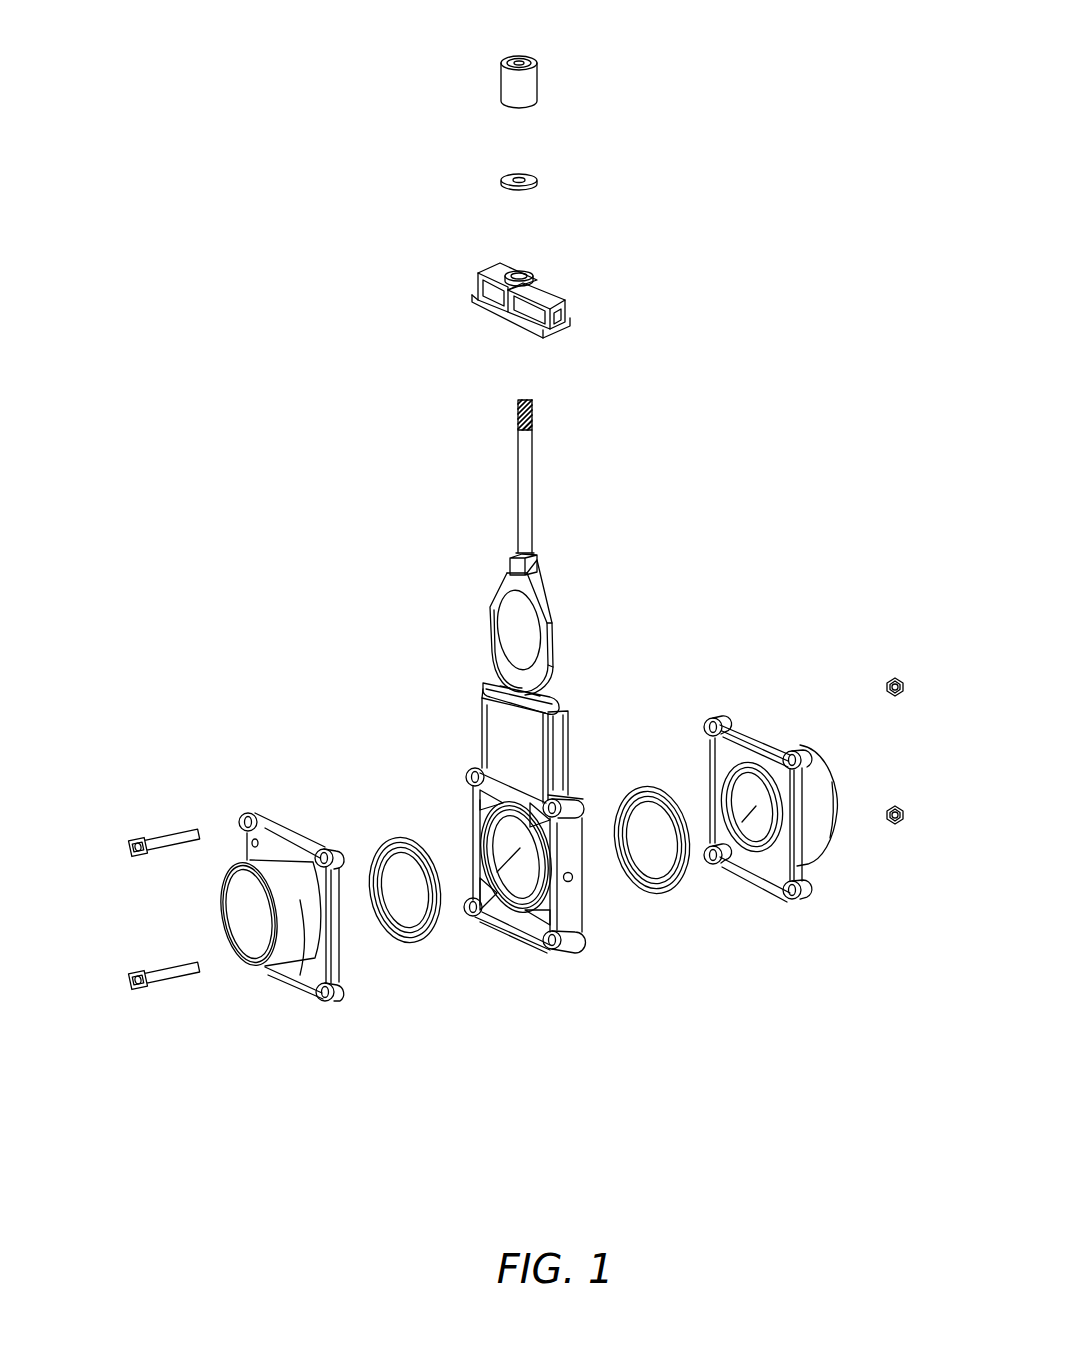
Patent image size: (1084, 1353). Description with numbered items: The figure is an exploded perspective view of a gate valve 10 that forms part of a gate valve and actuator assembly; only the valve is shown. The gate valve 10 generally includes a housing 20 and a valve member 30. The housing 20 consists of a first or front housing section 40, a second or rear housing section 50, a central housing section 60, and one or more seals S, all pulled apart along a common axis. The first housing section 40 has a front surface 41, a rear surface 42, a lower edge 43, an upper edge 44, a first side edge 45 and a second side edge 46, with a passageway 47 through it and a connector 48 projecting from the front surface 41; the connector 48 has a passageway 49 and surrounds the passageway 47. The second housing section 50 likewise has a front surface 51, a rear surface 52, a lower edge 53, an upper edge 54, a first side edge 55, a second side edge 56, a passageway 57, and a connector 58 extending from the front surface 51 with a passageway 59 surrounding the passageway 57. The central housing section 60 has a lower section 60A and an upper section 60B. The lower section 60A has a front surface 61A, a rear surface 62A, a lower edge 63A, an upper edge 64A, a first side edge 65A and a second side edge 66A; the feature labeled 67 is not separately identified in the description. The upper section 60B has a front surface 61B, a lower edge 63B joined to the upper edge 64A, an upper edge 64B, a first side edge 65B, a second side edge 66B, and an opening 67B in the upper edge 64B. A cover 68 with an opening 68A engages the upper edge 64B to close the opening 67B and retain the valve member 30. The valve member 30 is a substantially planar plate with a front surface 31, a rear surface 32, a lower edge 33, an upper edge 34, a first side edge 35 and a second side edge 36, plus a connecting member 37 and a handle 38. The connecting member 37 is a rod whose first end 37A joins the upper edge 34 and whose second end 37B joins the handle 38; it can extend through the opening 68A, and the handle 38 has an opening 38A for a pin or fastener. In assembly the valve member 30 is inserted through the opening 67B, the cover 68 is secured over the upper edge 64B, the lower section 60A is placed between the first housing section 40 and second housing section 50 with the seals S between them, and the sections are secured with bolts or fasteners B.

The gate valve 10 is at (205, 395).
The housing 20 is at (668, 1092).
The valve member 30 is at (628, 558).
The front surface 31 is at (534, 640).
The rear surface 32 is at (565, 645).
The lower edge 33 is at (485, 663).
The upper edge 34 is at (538, 560).
The first side edge 35 is at (562, 657).
The second side edge 36 is at (486, 612).
The connecting member 37 is at (532, 455).
The first end 37A is at (505, 542).
The second end 37B is at (527, 400).
The handle 38 is at (550, 67).
The opening 38A is at (490, 78).
The first housing section 40 is at (237, 1082).
The front surface 41 is at (292, 975).
The rear surface 42 is at (313, 835).
The lower edge 43 is at (262, 968).
The upper edge 44 is at (273, 840).
The first side edge 45 is at (335, 1002).
The second side edge 46 is at (236, 847).
The passageway 47 is at (345, 877).
The connector 48 is at (242, 888).
The passageway 49 is at (250, 936).
The second housing section 50 is at (878, 938).
The front surface 51 is at (818, 866).
The rear surface 52 is at (748, 742).
The lower edge 53 is at (768, 888).
The upper edge 54 is at (760, 745).
The first side edge 55 is at (705, 756).
The second side edge 56 is at (797, 805).
The passageway 57 is at (752, 828).
The connector 58 is at (828, 832).
The passageway 59 is at (840, 767).
The central housing section 60 is at (520, 1032).
The lower section 60A is at (600, 968).
The upper section 60B is at (600, 762).
The front surface 61A is at (538, 935).
The front surface 61B is at (468, 770).
The rear surface 62A is at (592, 848).
The lower edge 63A is at (481, 930).
The lower edge 63B is at (572, 787).
The upper edge 64A is at (478, 763).
The upper edge 64B is at (565, 712).
The first side edge 65A is at (573, 913).
The first side edge 65B is at (557, 745).
The second side edge 66A is at (468, 851).
The second side edge 66B is at (465, 707).
The body lug 67 is at (470, 918).
The opening 67B is at (568, 688).
The cover 68 is at (580, 320).
The opening 68A is at (527, 257).
The seals S is at (397, 948).
The bolts or fasteners B is at (135, 845).